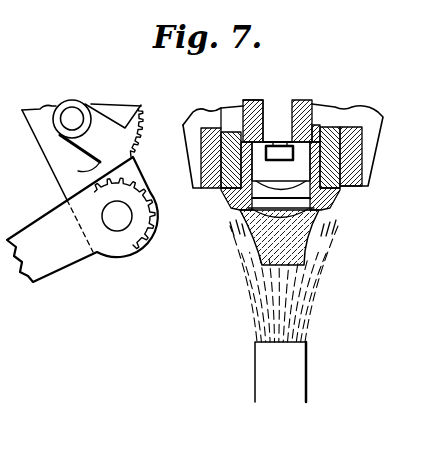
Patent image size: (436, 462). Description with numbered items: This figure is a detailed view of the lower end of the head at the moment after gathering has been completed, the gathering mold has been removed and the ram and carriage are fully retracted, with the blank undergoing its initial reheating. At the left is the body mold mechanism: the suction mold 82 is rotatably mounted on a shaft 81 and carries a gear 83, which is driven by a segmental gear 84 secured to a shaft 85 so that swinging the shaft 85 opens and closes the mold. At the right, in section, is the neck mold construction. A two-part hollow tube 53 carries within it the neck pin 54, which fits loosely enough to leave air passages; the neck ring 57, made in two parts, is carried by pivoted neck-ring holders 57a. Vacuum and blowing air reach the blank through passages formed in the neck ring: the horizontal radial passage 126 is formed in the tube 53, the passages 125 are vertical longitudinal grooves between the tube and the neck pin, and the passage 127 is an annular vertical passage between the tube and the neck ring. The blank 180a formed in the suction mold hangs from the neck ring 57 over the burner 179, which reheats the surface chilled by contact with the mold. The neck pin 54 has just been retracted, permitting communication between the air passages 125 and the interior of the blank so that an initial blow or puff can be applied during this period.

The shaft 85 is at (73, 118).
The segmental gear 84 is at (133, 116).
The shaft 81 is at (118, 220).
The gear 83 is at (132, 247).
The suction mold 82 is at (58, 258).
The passage 126 is at (244, 108).
The neck pin 54 is at (283, 127).
The neck-ring holder 57a is at (373, 140).
The tube 53 is at (337, 167).
The neck ring 57 is at (343, 178).
The passages 125 is at (337, 195).
The passage 127 is at (221, 193).
The blank 180a is at (313, 246).
The burner 179 is at (300, 362).